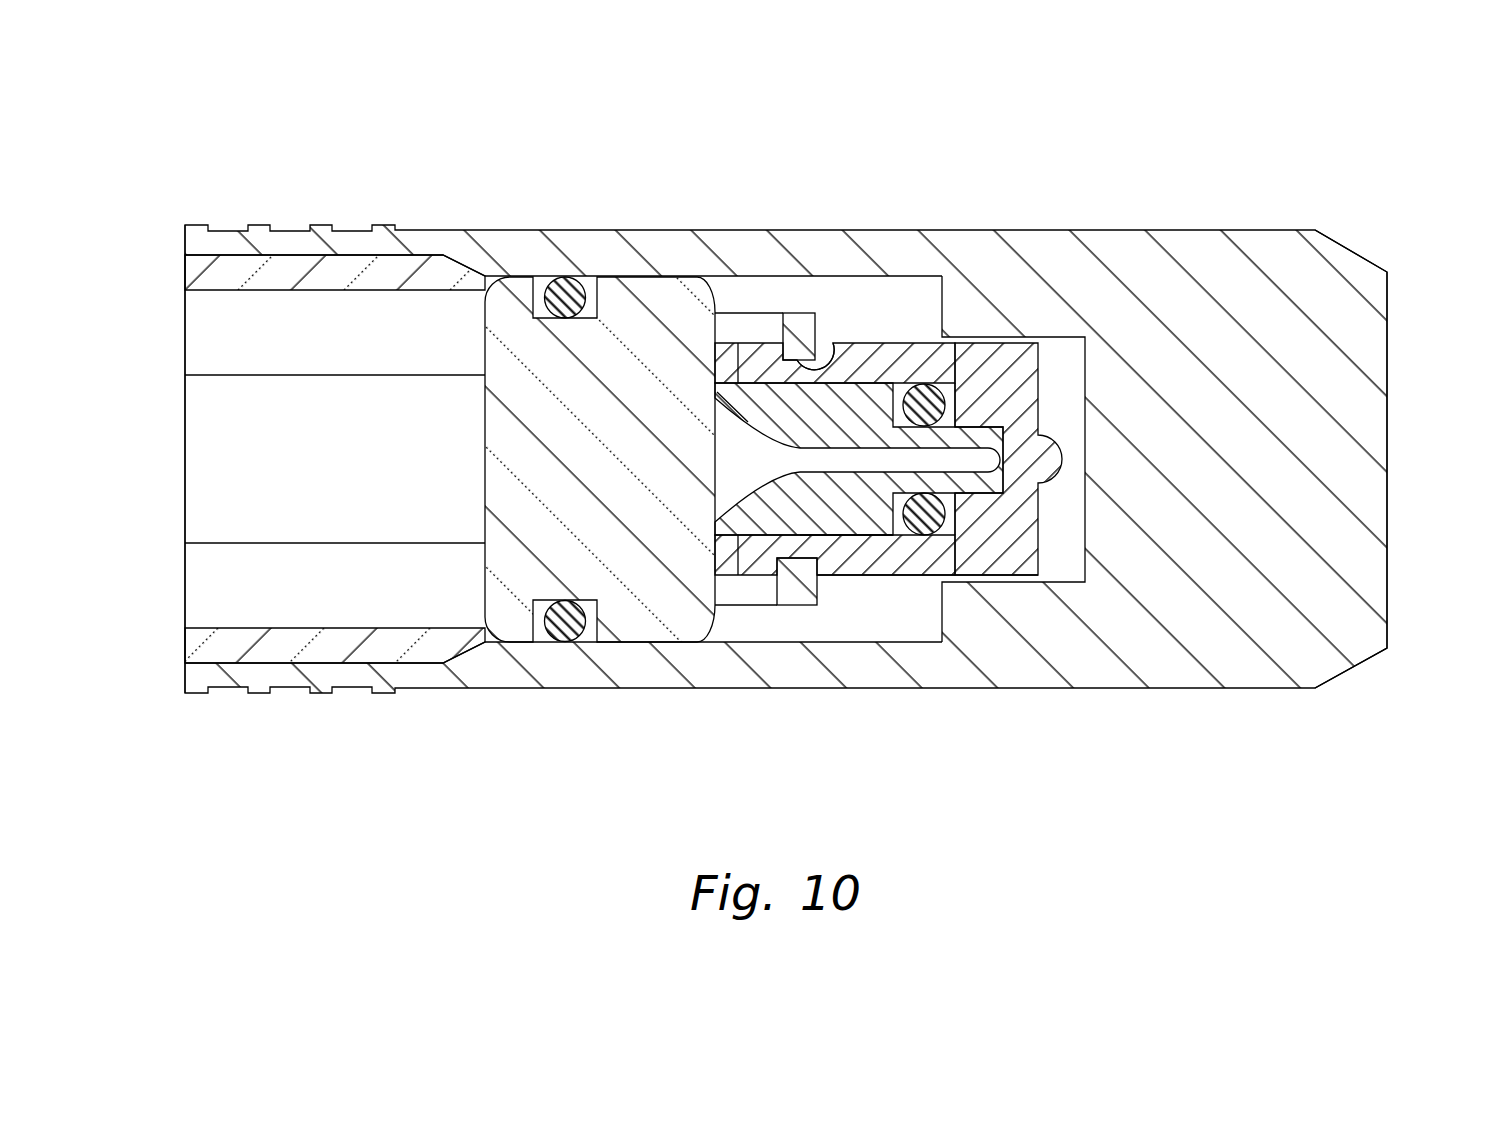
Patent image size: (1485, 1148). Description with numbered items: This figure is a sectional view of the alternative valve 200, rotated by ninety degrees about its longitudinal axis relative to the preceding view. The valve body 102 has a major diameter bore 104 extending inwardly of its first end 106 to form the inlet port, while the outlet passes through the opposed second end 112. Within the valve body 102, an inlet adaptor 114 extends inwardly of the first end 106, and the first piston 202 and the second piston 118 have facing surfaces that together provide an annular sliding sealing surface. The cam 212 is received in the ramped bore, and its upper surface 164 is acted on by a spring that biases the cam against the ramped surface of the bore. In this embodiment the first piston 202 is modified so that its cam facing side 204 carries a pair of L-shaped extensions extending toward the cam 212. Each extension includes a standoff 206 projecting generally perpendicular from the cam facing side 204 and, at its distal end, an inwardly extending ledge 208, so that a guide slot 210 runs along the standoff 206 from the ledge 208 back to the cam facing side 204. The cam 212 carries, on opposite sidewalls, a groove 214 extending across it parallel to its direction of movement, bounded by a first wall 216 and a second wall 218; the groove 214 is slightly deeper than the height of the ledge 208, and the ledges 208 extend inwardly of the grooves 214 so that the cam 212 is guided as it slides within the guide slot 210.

The valve 200 is at (200, 101).
The valve body 102 is at (1160, 228).
The major diameter bore 104 is at (911, 282).
The first end 106 is at (185, 240).
The second end 112 is at (1387, 357).
The inlet adaptor 114 is at (290, 254).
The second piston 118 is at (869, 530).
The upper surface 164 is at (1010, 372).
The first piston 202 is at (639, 280).
The cam facing side 204 is at (716, 607).
The standoff 206 is at (764, 316).
The ledge 208 is at (805, 355).
The guide slot 210 is at (745, 374).
The cam 212 is at (917, 582).
The groove 214 is at (790, 312).
The first wall 216 is at (746, 368).
The second wall 218 is at (830, 370).